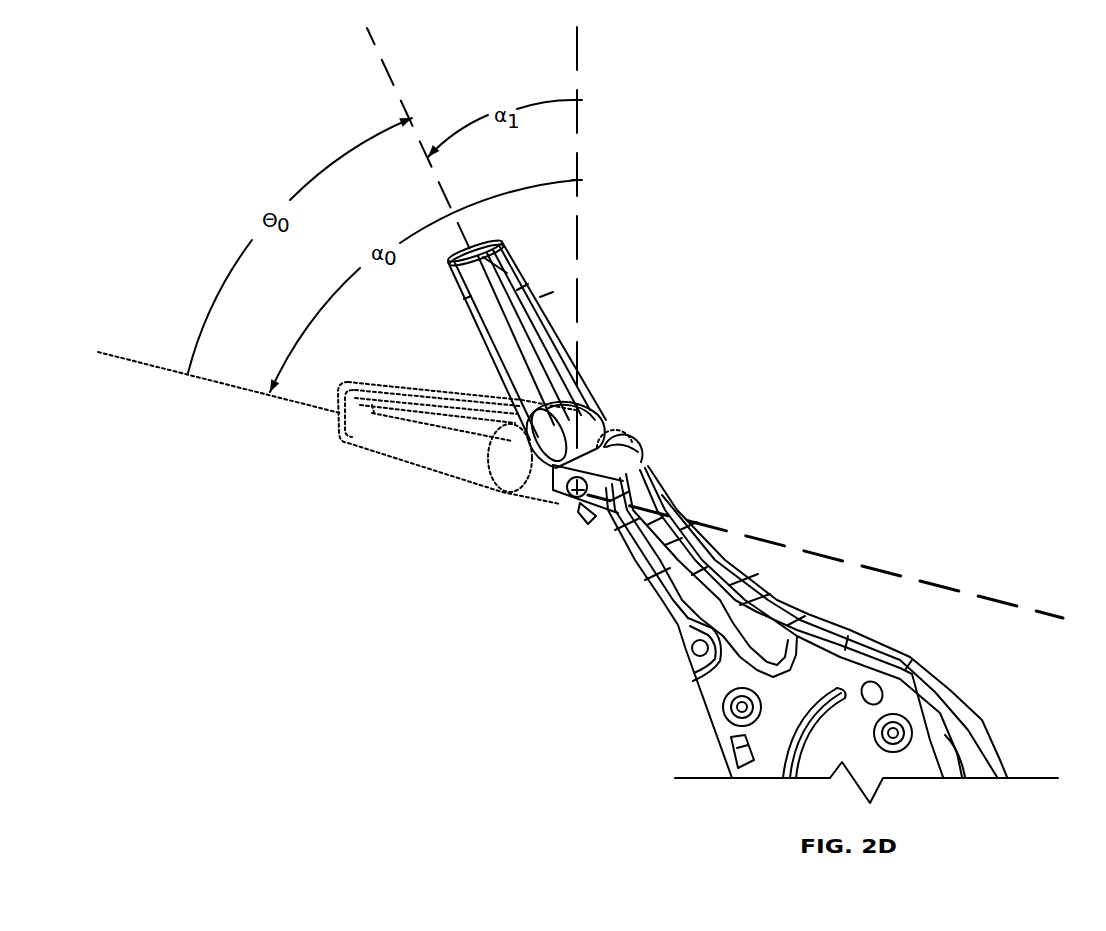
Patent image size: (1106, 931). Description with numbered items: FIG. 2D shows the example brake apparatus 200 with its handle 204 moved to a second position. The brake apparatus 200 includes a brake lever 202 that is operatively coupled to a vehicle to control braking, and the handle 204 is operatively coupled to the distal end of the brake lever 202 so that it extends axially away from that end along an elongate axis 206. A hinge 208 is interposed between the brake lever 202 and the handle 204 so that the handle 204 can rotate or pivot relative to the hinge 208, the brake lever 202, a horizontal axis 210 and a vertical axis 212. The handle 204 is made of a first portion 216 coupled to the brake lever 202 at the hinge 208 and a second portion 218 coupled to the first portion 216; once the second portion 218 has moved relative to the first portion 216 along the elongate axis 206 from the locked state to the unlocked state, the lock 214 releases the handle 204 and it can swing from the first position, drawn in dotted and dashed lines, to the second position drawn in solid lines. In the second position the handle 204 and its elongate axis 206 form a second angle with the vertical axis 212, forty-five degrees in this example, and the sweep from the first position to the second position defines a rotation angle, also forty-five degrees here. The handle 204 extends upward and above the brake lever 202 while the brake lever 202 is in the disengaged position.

The brake apparatus 200 is at (906, 229).
The brake lever 202 is at (673, 622).
The handle 204 is at (441, 318).
The elongate axis 206 is at (370, 37).
The hinge 208 is at (575, 498).
The horizontal axis 210 is at (948, 588).
The vertical axis 212 is at (579, 122).
The lock 214 is at (636, 458).
The first portion 216 is at (527, 462).
The second portion 218 is at (538, 288).